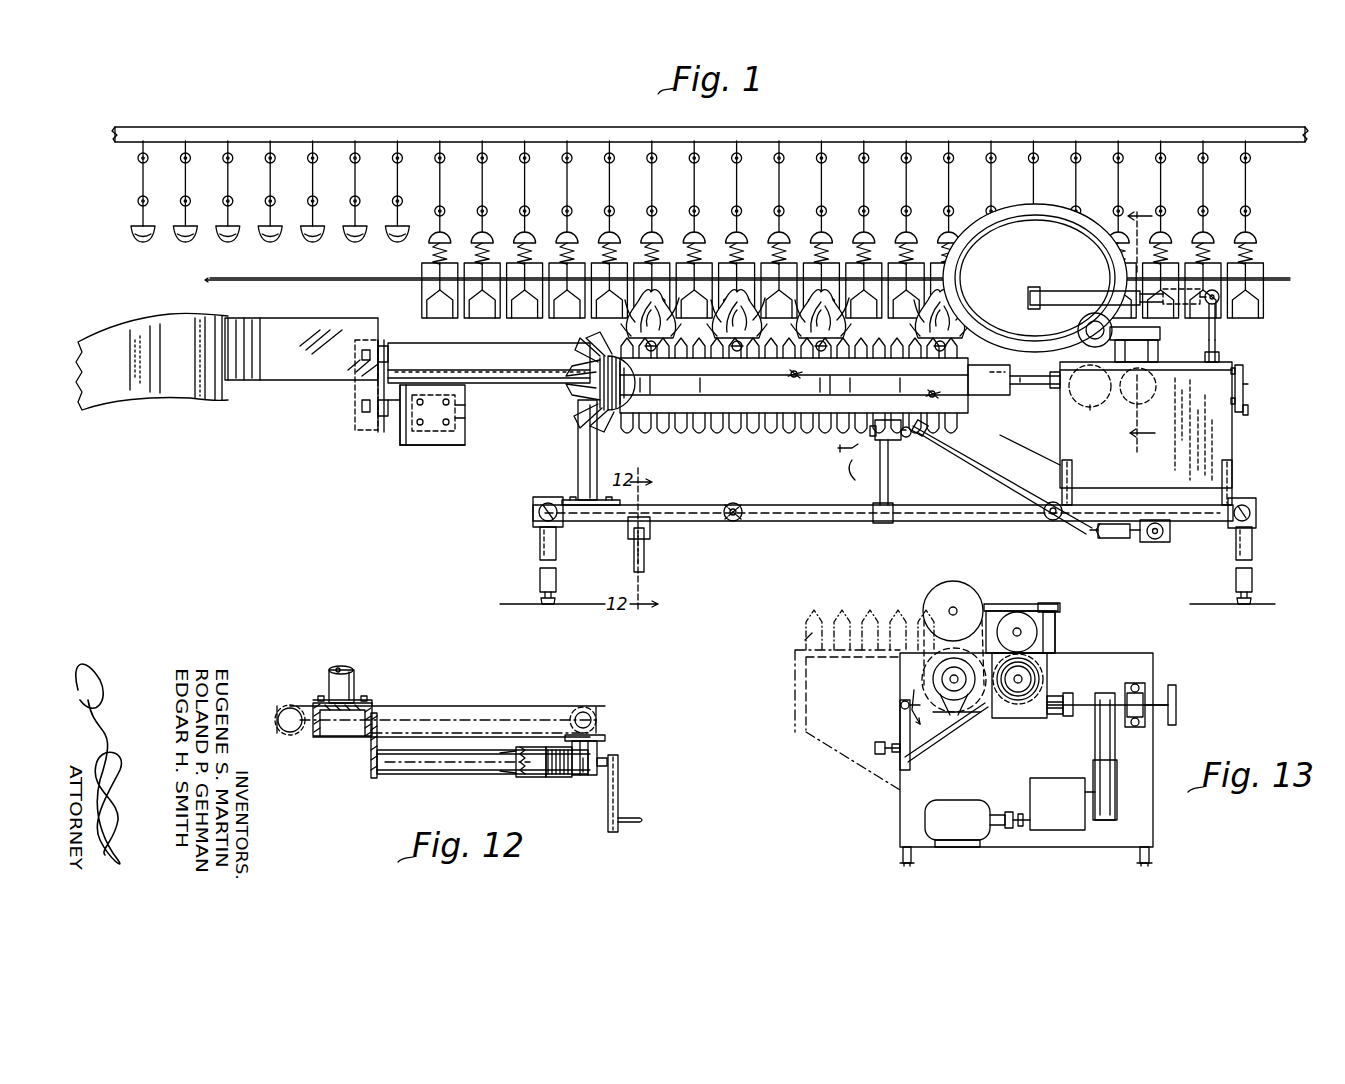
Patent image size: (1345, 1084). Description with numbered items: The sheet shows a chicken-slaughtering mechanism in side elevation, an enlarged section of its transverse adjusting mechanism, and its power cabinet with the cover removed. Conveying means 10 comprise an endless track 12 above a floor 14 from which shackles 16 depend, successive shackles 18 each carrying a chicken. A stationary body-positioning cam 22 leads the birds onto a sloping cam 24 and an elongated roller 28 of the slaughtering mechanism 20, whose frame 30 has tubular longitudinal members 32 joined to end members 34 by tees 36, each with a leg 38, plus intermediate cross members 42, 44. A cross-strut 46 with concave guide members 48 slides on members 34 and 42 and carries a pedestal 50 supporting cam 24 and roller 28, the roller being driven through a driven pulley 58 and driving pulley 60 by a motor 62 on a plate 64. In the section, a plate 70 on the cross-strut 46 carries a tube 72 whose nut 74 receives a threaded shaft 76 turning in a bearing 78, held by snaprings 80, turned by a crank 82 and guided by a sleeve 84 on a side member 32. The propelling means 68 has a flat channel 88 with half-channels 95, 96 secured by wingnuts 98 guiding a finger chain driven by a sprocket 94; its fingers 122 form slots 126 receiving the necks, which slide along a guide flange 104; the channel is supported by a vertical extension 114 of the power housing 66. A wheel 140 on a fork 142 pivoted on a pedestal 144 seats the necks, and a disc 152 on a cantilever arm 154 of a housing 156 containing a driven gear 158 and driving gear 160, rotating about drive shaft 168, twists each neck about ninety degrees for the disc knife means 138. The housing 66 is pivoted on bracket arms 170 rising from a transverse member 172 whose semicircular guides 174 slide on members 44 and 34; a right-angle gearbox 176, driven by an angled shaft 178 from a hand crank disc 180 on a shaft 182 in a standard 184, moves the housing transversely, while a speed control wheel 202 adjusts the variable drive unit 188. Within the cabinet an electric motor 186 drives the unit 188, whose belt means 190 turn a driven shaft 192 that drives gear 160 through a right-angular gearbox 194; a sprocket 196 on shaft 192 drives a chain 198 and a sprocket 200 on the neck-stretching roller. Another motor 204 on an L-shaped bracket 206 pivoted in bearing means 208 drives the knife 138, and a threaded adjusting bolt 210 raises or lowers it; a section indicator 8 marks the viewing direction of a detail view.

In FIG. 1, the chicken-suspending and conveying means 10 is at (418, 124).
In FIG. 1, the track 12 is at (268, 128).
In FIG. 1, the floor 14 is at (516, 602).
In FIG. 1, the shackles 16 is at (143, 188).
In FIG. 1, the shackles 18 is at (422, 290).
In FIG. 1, the slaughtering mechanism 20 is at (552, 434).
In FIG. 1, the body-positioning cam 22 is at (184, 382).
In FIG. 1, the positioning cam 24 is at (284, 370).
In FIG. 1, the roller 28 is at (545, 372).
In FIG. 1, the frame 30 is at (822, 524).
In FIG. 1, the longitudinal members 32 is at (956, 522).
In FIG. 12, the longitudinal members 32 is at (590, 710).
In FIG. 1, the end members 34 is at (1258, 500).
In FIG. 12, the end members 34 is at (434, 712).
In FIG. 1, the angular tees 36 is at (533, 504).
In FIG. 1, the leg 38 is at (540, 540).
In FIG. 1, the intermediate cross-frame member 42 is at (744, 508).
In FIG. 1, the intermediate cross-frame member 44 is at (1050, 520).
In FIG. 1, the cross-strut 46 is at (598, 500).
In FIG. 12, the cross-strut 46 is at (330, 738).
In FIG. 12, the concave guide members 48 is at (380, 704).
In FIG. 1, the pedestal 50 is at (584, 454).
In FIG. 12, the pedestal 50 is at (352, 682).
In FIG. 1, the driven gear or pulley 58 is at (380, 346).
In FIG. 1, the driving gear or pulley 60 is at (358, 420).
In FIG. 1, the motor 62 is at (452, 404).
In FIG. 1, the plate 64 is at (400, 436).
In FIG. 1, the power housing 66 is at (1222, 430).
In FIG. 13, the power housing 66 is at (1146, 822).
In FIG. 1, the propelling means 68 is at (565, 362).
In FIG. 13, the propelling means 68 is at (790, 688).
In FIG. 12, the plate 70 is at (372, 764).
In FIG. 12, the tube 72 is at (424, 764).
In FIG. 12, the nut 74 is at (528, 778).
In FIG. 12, the threaded shaft 76 is at (556, 778).
In FIG. 1, the bearing 78 is at (628, 530).
In FIG. 12, the bearing 78 is at (583, 772).
In FIG. 12, the snaprings or keys 80 is at (572, 744).
In FIG. 1, the crank 82 is at (646, 546).
In FIG. 12, the crank 82 is at (622, 796).
In FIG. 12, the guide sleeve 84 is at (548, 736).
In FIG. 1, the flat channel 88 is at (702, 432).
In FIG. 13, the sprocket 94 is at (1050, 656).
In FIG. 1, the half-channel 95 is at (764, 366).
In FIG. 1, the half-channel 96 is at (762, 424).
In FIG. 1, the bolts and wingnuts 98 is at (800, 380).
In FIG. 13, the flange 104 is at (812, 636).
In FIG. 1, the vertical extension 114 is at (1040, 444).
In FIG. 13, the vertical extension 114 is at (832, 762).
In FIG. 1, the fingers 122 is at (592, 358).
In FIG. 13, the fingers 122 is at (814, 612).
In FIG. 1, the slots 126 is at (786, 430).
In FIG. 13, the slots 126 is at (850, 606).
In FIG. 1, the knife means 138 is at (1089, 410).
In FIG. 13, the knife means 138 is at (935, 672).
In FIG. 1, the preliminary positioning means 140 is at (1015, 214).
In FIG. 1, the fork 142 is at (1068, 292).
In FIG. 1, the pedestal 144 is at (1216, 356).
In FIG. 1, the rotatable disc member 152 is at (1088, 330).
In FIG. 13, the rotatable disc member 152 is at (972, 602).
In FIG. 1, the cantilever arm 154 is at (1125, 330).
In FIG. 13, the cantilever arm 154 is at (998, 606).
In FIG. 1, the housing 156 is at (1158, 352).
In FIG. 13, the housing 156 is at (1058, 614).
In FIG. 13, the driven gear 158 is at (1050, 632).
In FIG. 1, the driving gear 160 is at (1145, 396).
In FIG. 13, the driving gear 160 is at (1042, 680).
In FIG. 13, the drive shaft 168 is at (945, 610).
In FIG. 1, the bracket arms 170 is at (1072, 496).
In FIG. 13, the bracket arms 170 is at (902, 856).
In FIG. 1, the transverse frame member 172 is at (1208, 523).
In FIG. 1, the semicircular guide members 174 is at (1060, 535).
In FIG. 1, the right-angle gearbox 176 is at (1152, 545).
In FIG. 1, the drive shaft 178 is at (1000, 486).
In FIG. 1, the hand crank disc 180 is at (848, 462).
In FIG. 1, the shaft 182 is at (898, 440).
In FIG. 1, the standard 184 is at (890, 478).
In FIG. 13, the electric motor 186 is at (955, 806).
In FIG. 13, the variable drive unit 188 is at (1062, 804).
In FIG. 13, the pulleys and belt means 190 is at (1112, 758).
In FIG. 13, the driven shaft 192 is at (1058, 714).
In FIG. 13, the right-angular gearbox 194 is at (1048, 720).
In FIG. 1, the sprocket gear or pulley 196 is at (1250, 410).
In FIG. 13, the sprocket gear or pulley 196 is at (1177, 690).
In FIG. 1, the sprocket chain or belt 198 is at (1246, 388).
In FIG. 1, the sprocket gear or pulley 200 is at (1243, 368).
In FIG. 1, the speed control wheel 202 is at (1000, 392).
In FIG. 13, the electric motor 204 is at (1010, 716).
In FIG. 13, the adjustable bracket 206 is at (935, 710).
In FIG. 13, the bearing means 208 is at (904, 700).
In FIG. 13, the threaded adjusting bolt 210 is at (882, 757).
In FIG. 1, the section line 8- 8 is at (1148, 329).